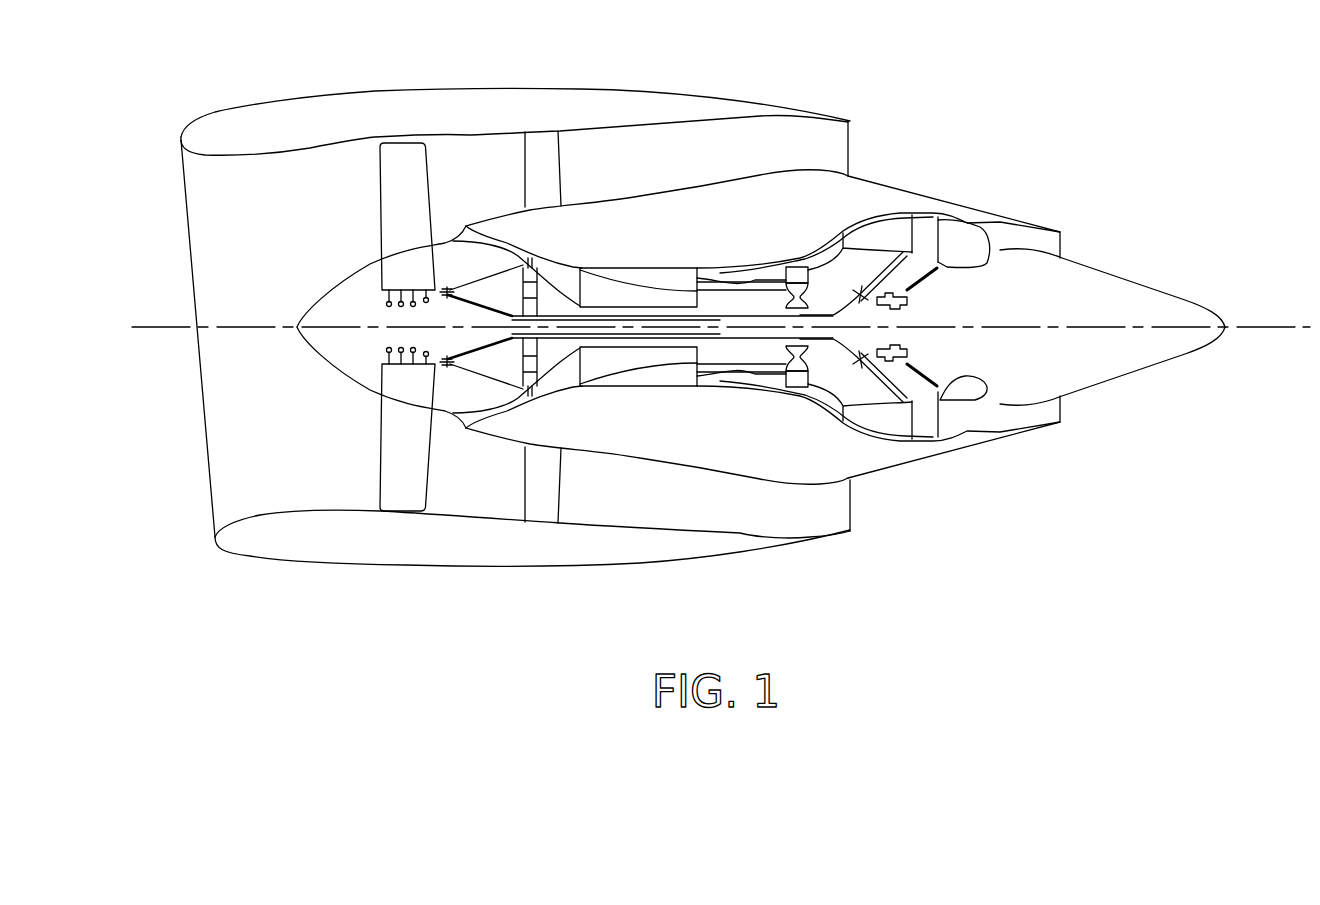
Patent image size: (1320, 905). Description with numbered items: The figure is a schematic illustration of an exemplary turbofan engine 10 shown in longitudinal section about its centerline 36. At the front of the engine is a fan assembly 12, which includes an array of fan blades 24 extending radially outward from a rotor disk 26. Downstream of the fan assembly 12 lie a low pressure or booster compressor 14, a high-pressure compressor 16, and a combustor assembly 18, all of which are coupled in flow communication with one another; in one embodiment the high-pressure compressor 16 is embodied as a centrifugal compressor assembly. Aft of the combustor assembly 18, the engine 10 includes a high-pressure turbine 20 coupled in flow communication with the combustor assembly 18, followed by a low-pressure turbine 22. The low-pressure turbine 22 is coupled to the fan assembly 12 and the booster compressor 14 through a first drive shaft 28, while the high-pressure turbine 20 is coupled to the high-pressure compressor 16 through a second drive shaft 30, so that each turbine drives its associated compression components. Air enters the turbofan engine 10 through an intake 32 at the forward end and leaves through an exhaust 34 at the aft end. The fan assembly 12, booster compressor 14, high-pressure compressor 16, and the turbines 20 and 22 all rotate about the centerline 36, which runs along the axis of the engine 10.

The turbofan engine 10 is at (984, 85).
The fan assembly 12 is at (358, 192).
The booster compressor 14 is at (468, 203).
The high-pressure compressor 16 is at (623, 256).
The combustor assembly 18 is at (731, 249).
The high-pressure turbine 20 is at (804, 240).
The low-pressure turbine 22 is at (888, 205).
The fan blades 24 is at (421, 226).
The rotor disk 26 is at (369, 316).
The first drive shaft 28 is at (564, 298).
The second drive shaft 30 is at (748, 283).
The intake 32 is at (146, 188).
The exhaust 34 is at (1075, 232).
The centerline 36 is at (1262, 327).